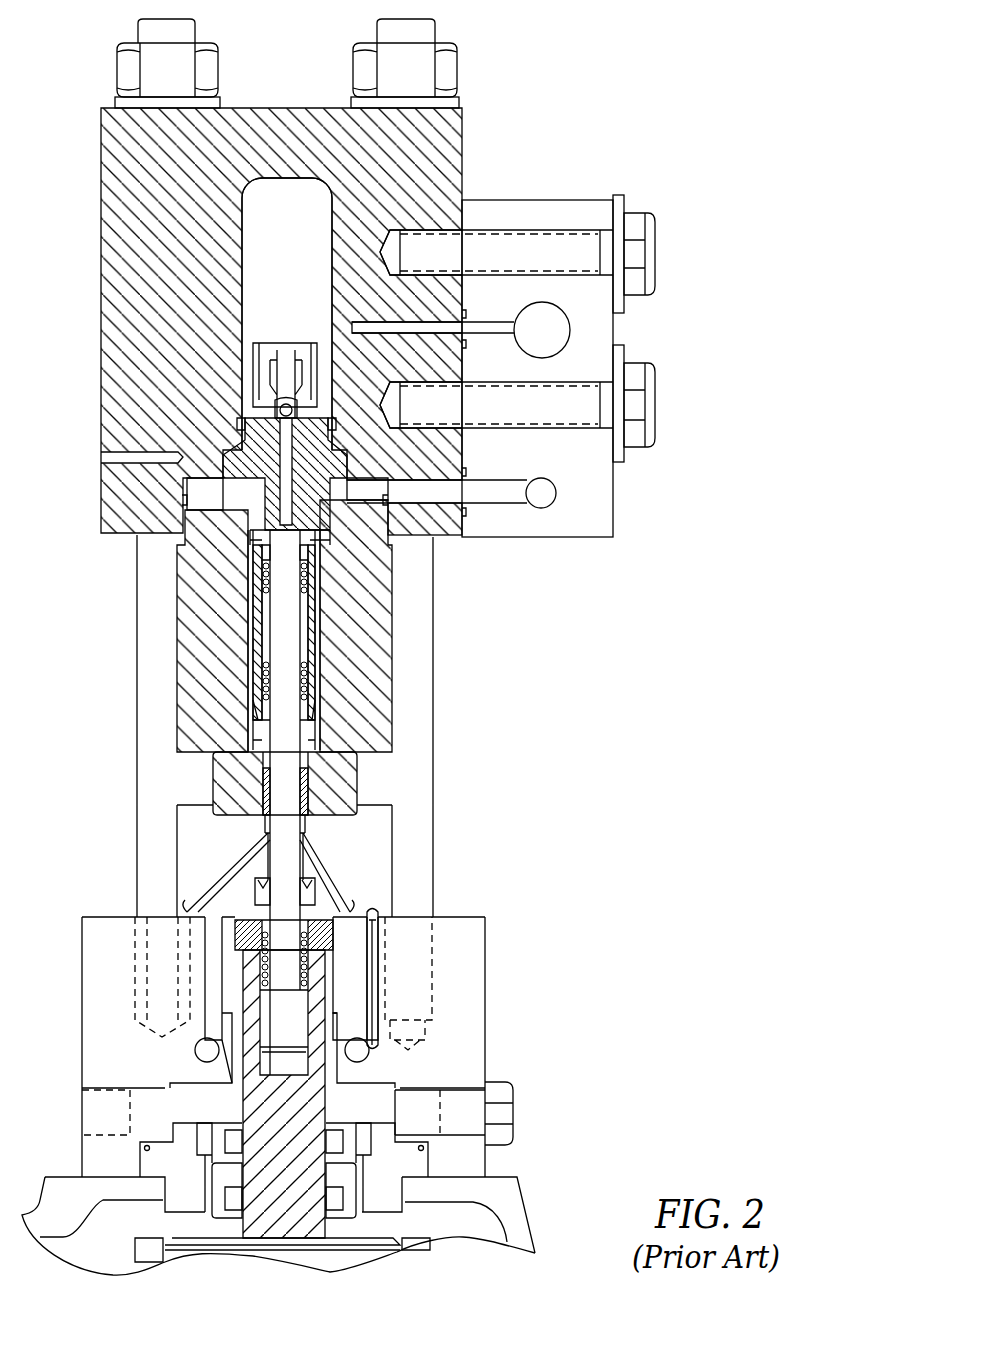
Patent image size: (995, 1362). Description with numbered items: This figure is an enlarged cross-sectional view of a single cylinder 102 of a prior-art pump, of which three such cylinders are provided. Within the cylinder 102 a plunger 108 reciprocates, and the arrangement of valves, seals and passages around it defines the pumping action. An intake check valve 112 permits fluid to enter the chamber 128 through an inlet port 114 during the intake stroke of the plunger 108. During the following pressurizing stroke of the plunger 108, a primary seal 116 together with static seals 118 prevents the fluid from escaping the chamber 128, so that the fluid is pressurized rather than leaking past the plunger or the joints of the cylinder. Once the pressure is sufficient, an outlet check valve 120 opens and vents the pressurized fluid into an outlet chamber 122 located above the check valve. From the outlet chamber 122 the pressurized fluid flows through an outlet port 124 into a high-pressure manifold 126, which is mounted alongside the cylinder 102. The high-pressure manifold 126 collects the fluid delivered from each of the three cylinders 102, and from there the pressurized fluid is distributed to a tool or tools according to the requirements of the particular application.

The cylinder 102 is at (268, 68).
The plunger 108 is at (277, 623).
The intake check valve 112 is at (250, 552).
The inlet port 114 is at (330, 518).
The primary seal 116 is at (230, 785).
The static seals 118 is at (183, 360).
The outlet check valve 120 is at (286, 325).
The outlet chamber 122 is at (292, 222).
The outlet port 124 is at (352, 328).
The high-pressure manifold 126 is at (560, 331).
The chamber 128 is at (328, 545).